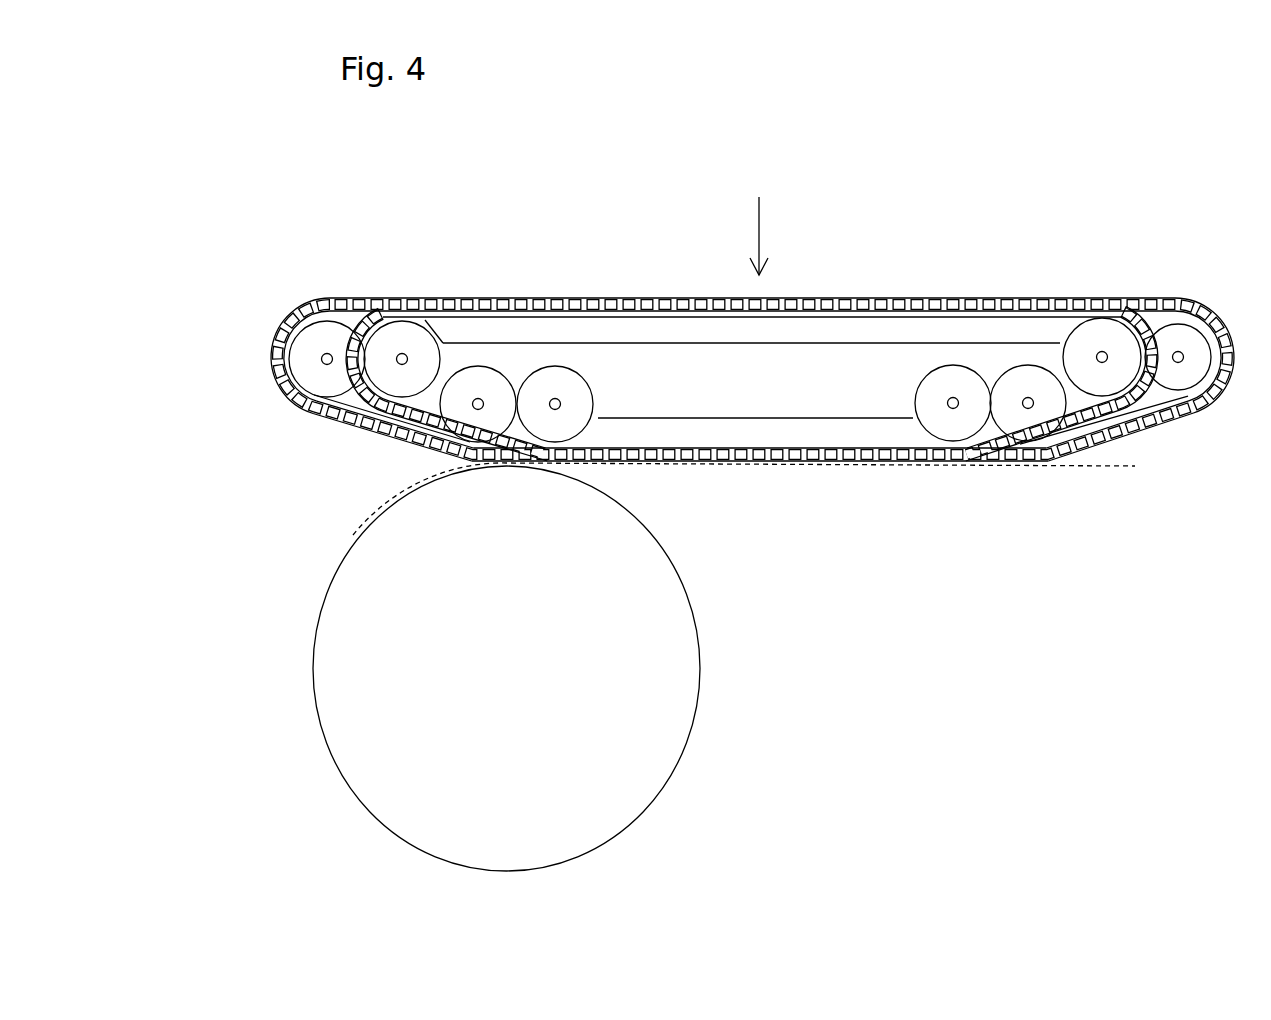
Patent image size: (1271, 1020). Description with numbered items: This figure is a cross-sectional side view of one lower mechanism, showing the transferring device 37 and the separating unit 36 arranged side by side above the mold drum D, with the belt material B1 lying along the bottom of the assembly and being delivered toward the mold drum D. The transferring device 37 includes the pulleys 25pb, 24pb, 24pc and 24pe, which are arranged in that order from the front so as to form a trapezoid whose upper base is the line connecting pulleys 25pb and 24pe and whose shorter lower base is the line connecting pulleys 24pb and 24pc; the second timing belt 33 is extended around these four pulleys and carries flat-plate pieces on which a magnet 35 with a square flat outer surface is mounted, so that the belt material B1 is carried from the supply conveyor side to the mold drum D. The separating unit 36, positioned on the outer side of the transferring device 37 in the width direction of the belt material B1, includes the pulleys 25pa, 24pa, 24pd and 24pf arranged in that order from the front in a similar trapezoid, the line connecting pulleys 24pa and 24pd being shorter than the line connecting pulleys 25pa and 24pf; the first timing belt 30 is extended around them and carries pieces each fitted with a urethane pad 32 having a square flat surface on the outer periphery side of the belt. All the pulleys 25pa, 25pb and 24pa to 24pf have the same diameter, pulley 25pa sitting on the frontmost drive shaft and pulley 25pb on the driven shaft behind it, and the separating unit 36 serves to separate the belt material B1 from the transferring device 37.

The pulley 24pa is at (488, 385).
The pulley 24pb is at (568, 395).
The pulley 24pc is at (940, 385).
The pulley 24pd is at (1017, 380).
The pulley 24pe is at (1092, 338).
The pulley 24pf is at (1187, 337).
The pulley 25pa is at (313, 333).
The pulley 25pb is at (413, 338).
The first timing belt 30 is at (333, 296).
The pad 32 is at (322, 415).
The second timing belt 33 is at (700, 297).
The magnet 35 is at (792, 462).
The separating unit 36 is at (275, 367).
The transferring device 37 is at (762, 215).
The belt material B1 is at (1072, 467).
The mold drum D is at (703, 690).